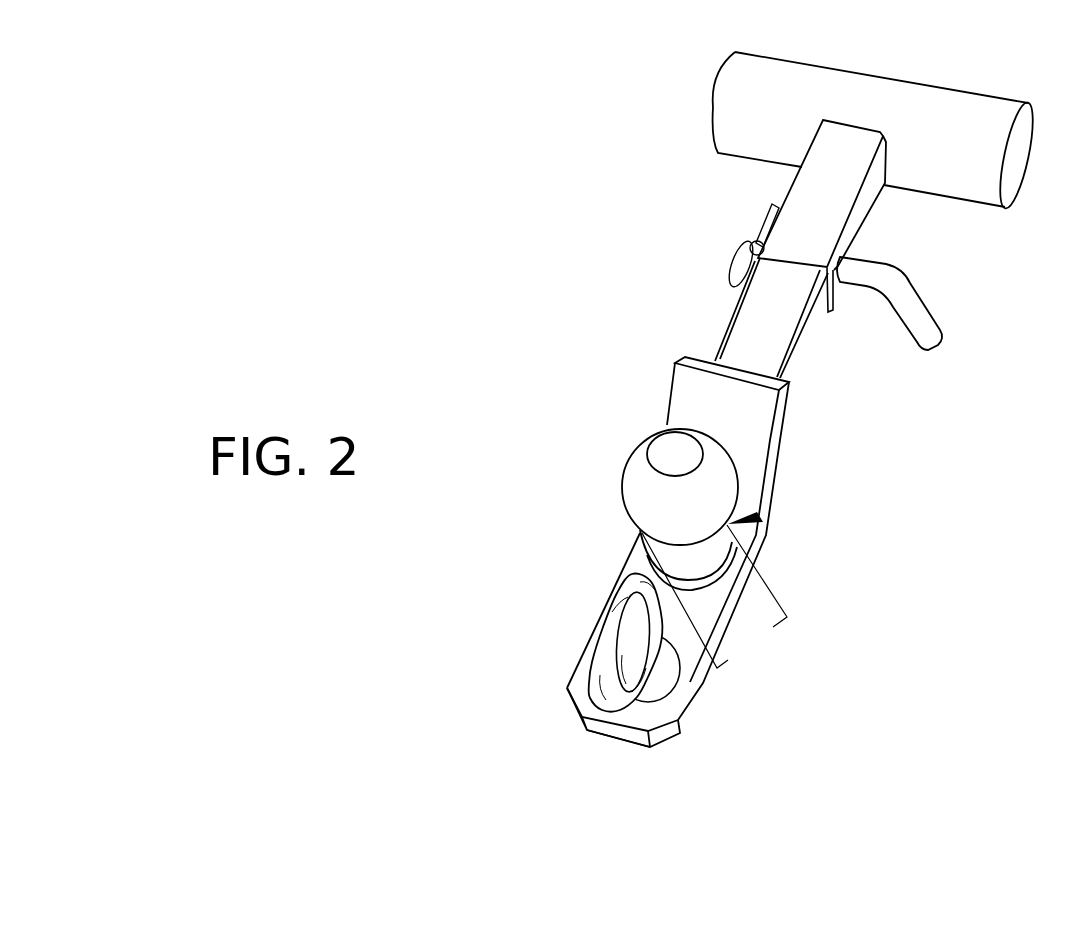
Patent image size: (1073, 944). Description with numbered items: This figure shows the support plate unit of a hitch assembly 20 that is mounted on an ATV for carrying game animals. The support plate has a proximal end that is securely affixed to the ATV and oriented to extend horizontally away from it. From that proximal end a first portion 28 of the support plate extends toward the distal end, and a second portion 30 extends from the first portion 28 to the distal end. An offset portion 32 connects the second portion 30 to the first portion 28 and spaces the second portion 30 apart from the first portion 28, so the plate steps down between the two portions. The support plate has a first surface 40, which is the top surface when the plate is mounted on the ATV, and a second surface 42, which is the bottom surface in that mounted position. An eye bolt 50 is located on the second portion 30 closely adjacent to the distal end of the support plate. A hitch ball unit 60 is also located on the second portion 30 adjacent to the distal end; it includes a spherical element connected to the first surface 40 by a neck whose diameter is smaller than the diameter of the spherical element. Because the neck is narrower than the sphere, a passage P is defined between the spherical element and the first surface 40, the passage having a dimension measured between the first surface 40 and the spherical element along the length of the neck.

The hitch assembly 20 is at (753, 552).
The first portion 28 is at (805, 216).
The second portion 30 is at (688, 714).
The offset portion 32 is at (745, 412).
The first surface 40 is at (578, 684).
The second surface 42 is at (630, 733).
The eye bolt 50 is at (596, 677).
The hitch ball unit 60 is at (715, 462).
The passage P is at (762, 515).
The element ATV is at (952, 172).